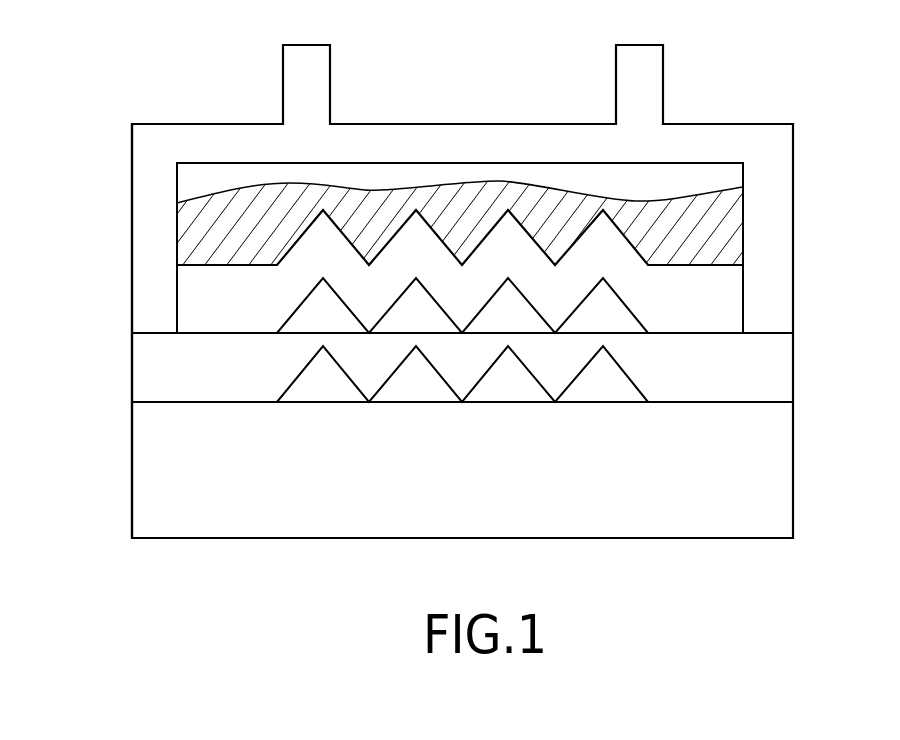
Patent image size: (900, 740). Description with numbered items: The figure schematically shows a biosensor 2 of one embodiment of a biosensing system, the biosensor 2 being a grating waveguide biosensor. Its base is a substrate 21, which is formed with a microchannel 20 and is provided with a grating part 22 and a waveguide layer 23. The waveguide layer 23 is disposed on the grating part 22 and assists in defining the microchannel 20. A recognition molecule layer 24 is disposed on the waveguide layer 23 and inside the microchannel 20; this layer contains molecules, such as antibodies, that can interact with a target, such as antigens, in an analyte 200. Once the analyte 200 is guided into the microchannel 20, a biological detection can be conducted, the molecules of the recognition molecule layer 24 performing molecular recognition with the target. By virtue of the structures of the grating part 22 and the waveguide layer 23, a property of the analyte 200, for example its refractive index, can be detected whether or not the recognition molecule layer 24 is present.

The biosensor 2 is at (111, 109).
The microchannel 20 is at (202, 177).
The substrate 21 is at (132, 223).
The grating part 22 is at (606, 394).
The waveguide layer 23 is at (768, 369).
The recognition molecule layer 24 is at (730, 300).
The analyte 200 is at (727, 228).